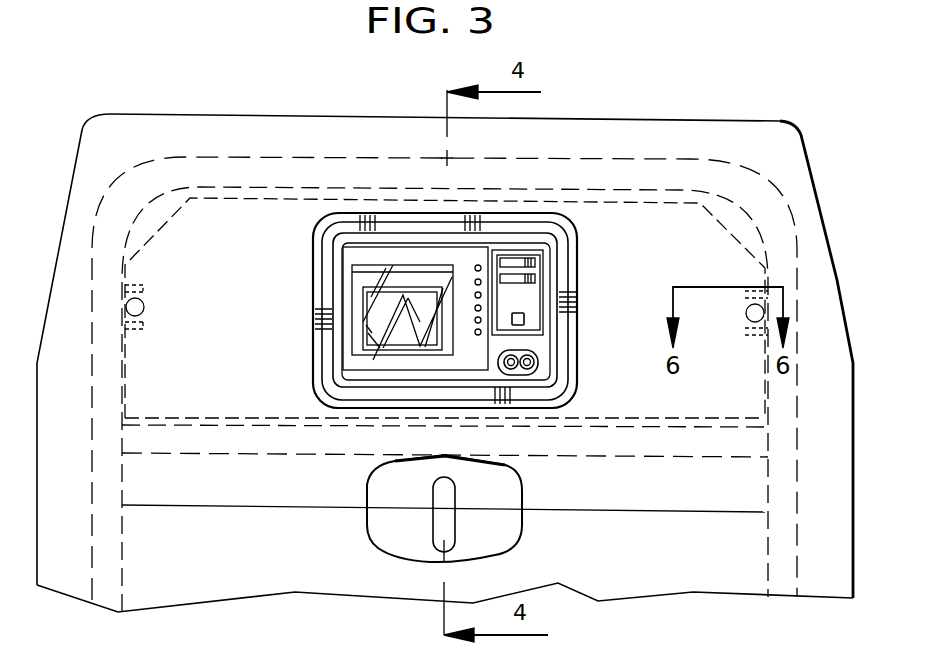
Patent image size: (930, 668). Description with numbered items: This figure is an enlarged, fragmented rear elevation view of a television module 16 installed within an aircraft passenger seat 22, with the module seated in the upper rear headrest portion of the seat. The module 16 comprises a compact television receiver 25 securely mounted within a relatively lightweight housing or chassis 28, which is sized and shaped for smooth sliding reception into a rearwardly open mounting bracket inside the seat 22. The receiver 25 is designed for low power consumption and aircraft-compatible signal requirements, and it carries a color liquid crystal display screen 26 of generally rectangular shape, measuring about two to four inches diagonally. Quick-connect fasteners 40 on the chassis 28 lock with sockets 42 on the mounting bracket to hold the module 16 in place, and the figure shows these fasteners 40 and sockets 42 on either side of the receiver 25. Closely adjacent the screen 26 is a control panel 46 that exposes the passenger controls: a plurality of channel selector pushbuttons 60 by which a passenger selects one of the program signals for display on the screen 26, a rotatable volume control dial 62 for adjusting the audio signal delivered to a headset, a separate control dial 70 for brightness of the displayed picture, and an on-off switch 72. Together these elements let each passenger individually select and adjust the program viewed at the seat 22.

The television module 16 is at (628, 227).
The aircraft passenger seat 22 is at (776, 122).
The television receiver 25 is at (325, 298).
The liquid crystal display screen 26 is at (375, 330).
The chassis 28 is at (243, 390).
The fasteners 40 is at (144, 308).
The sockets 42 is at (750, 336).
The control panel 46 is at (542, 347).
The channel selector pushbuttons 60 is at (479, 320).
The volume control dial 62 is at (517, 262).
The brightness control dial 70 is at (515, 285).
The on-off switch 72 is at (527, 318).